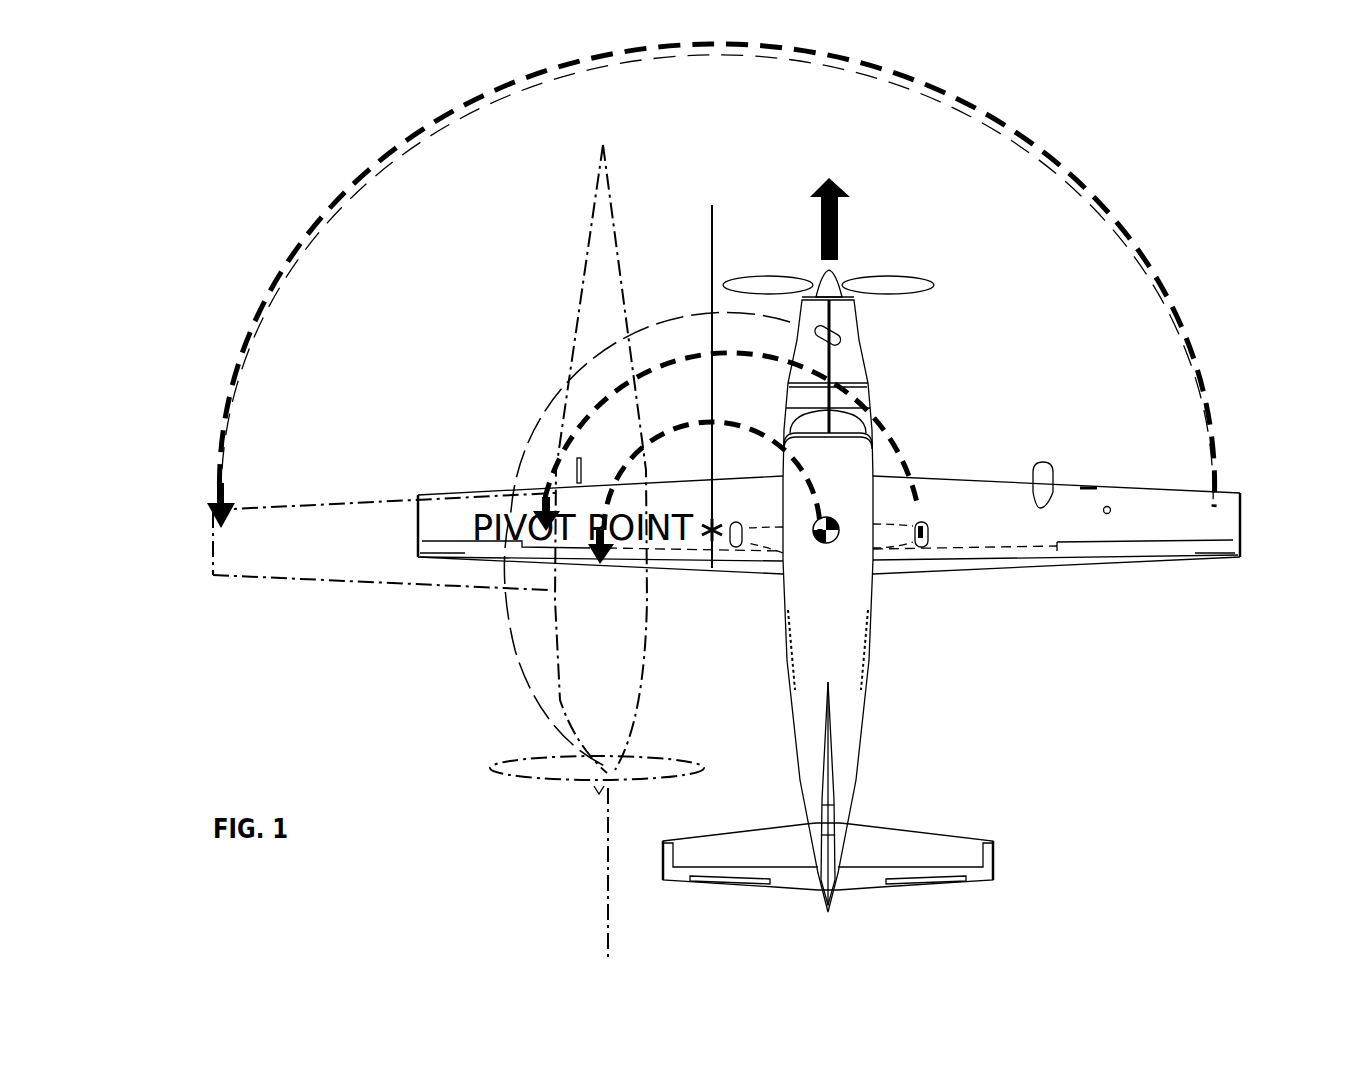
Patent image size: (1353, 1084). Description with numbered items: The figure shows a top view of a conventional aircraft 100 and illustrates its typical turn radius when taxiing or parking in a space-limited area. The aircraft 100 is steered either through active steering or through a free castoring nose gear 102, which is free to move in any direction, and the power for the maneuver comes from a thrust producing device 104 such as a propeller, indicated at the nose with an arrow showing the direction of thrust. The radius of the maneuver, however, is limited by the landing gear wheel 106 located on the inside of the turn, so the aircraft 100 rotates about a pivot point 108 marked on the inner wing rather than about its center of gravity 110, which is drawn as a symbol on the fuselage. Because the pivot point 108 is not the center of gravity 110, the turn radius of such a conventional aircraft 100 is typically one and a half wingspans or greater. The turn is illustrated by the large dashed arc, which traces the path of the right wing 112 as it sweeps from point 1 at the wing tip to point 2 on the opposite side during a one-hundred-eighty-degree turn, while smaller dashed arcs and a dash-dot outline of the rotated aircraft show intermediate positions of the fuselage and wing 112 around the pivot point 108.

The conventional aircraft 100 is at (222, 175).
The point 1 is at (1243, 498).
The point 2 is at (213, 517).
The free castoring nose gear 102 is at (843, 338).
The thrust producing device 104 is at (843, 281).
The landing gear wheel 106 is at (737, 547).
The pivot point 108 is at (712, 542).
The center of gravity 110 is at (823, 547).
The right wing 112 is at (340, 550).